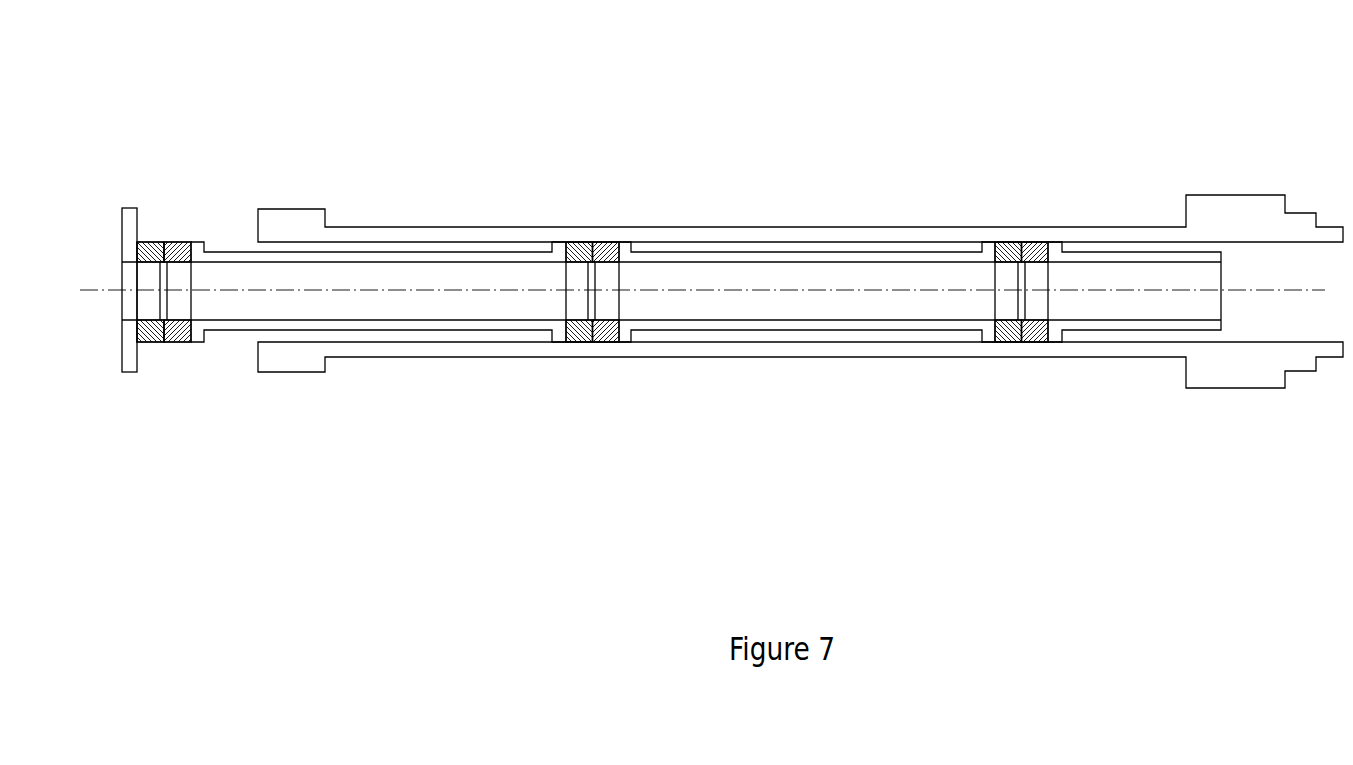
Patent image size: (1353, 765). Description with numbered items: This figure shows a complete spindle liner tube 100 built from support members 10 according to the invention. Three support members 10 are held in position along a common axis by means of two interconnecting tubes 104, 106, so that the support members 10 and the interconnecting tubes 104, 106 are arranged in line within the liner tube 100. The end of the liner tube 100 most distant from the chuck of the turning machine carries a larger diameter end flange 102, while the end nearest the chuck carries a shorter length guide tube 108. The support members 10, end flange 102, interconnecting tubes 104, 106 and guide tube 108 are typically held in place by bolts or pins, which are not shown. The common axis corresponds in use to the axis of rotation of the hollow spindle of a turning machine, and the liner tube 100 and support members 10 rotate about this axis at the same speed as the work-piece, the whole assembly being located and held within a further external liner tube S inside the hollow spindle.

The spindle liner tube 100 is at (193, 182).
The end flange 102 is at (132, 227).
The outer sleeve / housing S is at (757, 232).
The interconnecting tube 104 is at (524, 255).
The interconnecting tube 106 is at (883, 260).
The guide tube 108 is at (1127, 260).
The support member 10 is at (158, 343).